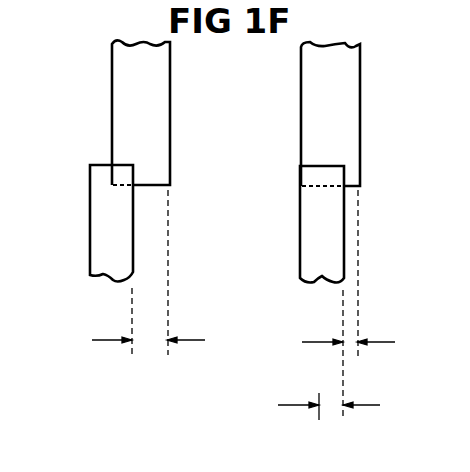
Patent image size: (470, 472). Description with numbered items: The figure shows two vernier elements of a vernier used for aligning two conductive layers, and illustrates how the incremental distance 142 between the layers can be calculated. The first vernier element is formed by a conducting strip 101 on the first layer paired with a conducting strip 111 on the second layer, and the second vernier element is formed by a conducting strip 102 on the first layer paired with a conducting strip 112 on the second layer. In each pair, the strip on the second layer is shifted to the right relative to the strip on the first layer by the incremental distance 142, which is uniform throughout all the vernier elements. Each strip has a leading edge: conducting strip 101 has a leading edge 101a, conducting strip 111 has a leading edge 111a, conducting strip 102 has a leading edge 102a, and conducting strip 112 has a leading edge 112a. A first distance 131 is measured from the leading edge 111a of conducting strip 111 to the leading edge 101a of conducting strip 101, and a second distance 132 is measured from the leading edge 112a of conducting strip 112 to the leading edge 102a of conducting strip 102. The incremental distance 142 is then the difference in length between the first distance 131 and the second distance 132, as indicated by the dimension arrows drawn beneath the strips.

The conducting strip 101 is at (158, 99).
The conducting strip 102 is at (350, 109).
The conducting strip 111 is at (90, 250).
The conducting strip 112 is at (300, 232).
The leading edge 101a is at (170, 180).
The leading edge 102a is at (360, 172).
The leading edge 111a is at (133, 218).
The leading edge 112a is at (344, 218).
The first distance 131 is at (145, 353).
The second distance 132 is at (352, 358).
The incremental distance 142 is at (333, 424).